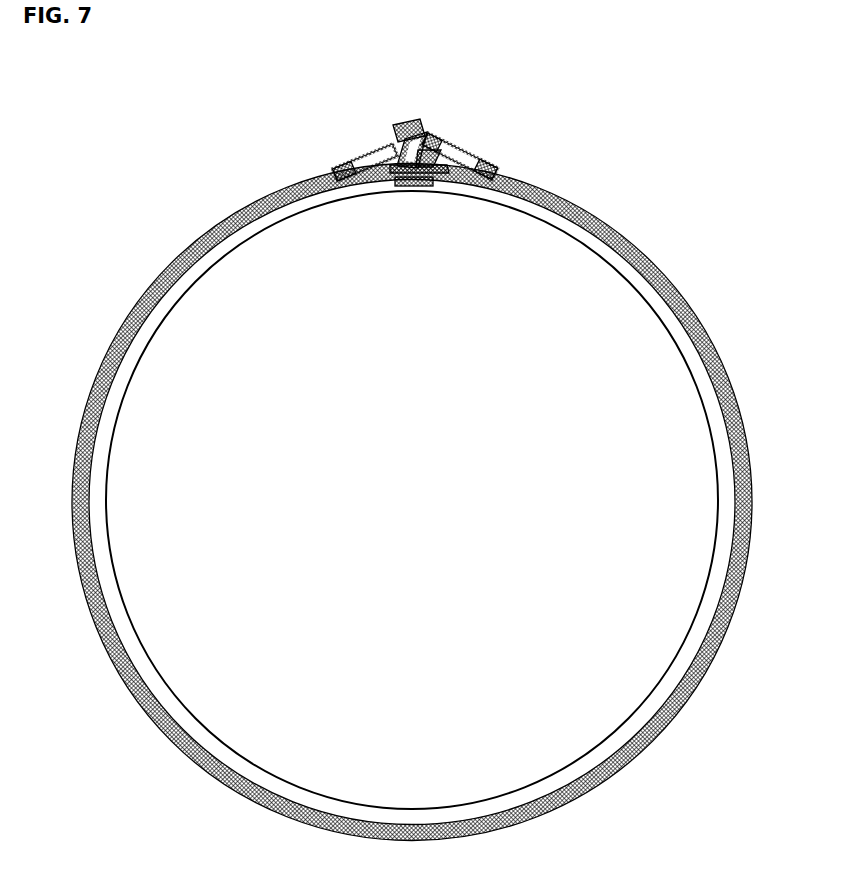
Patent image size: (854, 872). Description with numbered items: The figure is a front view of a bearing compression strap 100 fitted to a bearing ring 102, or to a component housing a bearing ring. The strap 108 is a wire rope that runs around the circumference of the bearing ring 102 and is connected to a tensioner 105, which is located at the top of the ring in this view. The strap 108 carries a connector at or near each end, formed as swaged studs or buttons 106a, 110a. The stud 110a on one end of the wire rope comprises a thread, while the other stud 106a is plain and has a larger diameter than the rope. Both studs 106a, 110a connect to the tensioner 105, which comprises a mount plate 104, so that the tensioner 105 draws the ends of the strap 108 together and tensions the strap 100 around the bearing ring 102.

The strap 100 is at (647, 176).
The bearing ring 102 is at (222, 242).
The mount plate 104 is at (388, 174).
The tensioner 105 is at (430, 129).
The stud 106a is at (378, 158).
The strap 108 is at (628, 238).
The stud 110a is at (452, 154).